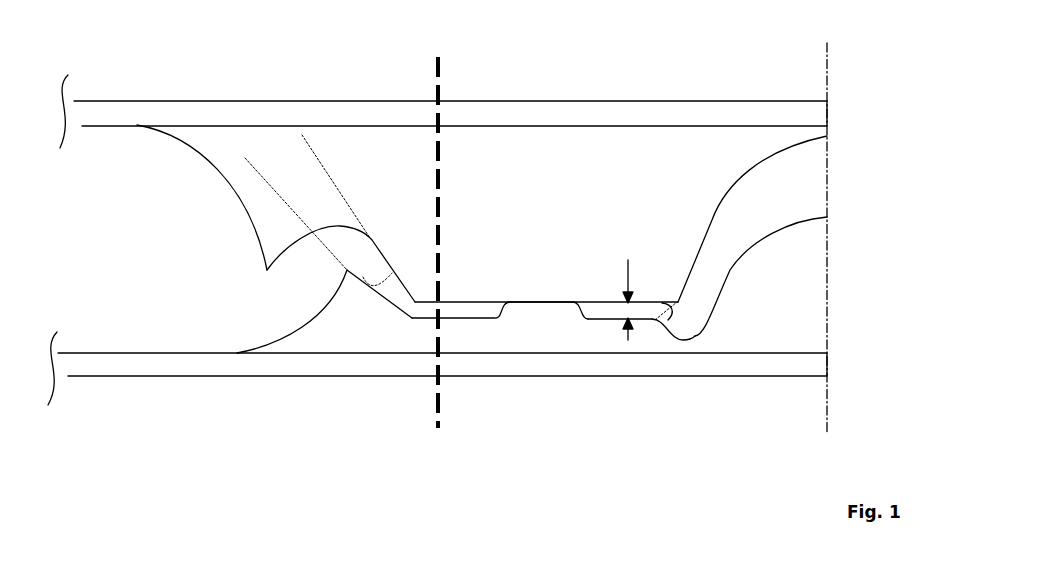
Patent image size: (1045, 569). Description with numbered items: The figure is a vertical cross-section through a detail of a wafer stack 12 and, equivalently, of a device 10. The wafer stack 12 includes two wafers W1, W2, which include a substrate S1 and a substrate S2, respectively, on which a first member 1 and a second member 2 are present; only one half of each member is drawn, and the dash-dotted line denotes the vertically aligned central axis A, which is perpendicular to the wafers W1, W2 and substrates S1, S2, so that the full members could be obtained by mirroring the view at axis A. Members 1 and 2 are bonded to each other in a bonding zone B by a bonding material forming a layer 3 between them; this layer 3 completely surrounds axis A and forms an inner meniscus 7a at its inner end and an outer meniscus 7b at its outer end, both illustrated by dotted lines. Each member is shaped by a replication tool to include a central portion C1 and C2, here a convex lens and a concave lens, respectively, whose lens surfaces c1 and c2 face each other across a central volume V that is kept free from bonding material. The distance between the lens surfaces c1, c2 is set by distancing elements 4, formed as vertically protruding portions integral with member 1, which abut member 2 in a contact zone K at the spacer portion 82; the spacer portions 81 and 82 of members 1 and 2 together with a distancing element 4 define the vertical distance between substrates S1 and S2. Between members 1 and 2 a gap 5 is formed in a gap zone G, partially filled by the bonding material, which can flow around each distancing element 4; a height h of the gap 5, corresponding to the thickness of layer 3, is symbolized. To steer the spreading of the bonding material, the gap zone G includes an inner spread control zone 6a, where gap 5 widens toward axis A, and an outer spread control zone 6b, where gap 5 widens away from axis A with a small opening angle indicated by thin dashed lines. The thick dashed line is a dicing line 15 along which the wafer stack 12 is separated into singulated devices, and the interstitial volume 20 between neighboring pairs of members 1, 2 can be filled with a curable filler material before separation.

The first member 1 is at (783, 329).
The second member 2 is at (330, 156).
The layer 3 is at (602, 308).
The distancing element 4 is at (522, 305).
The gap 5 is at (434, 234).
The inner spread control zone 6a is at (662, 302).
The outer spread control zone 6b is at (387, 290).
The inner meniscus 7a is at (383, 305).
The outer meniscus 7b is at (677, 333).
The device 10 is at (775, 447).
The wafer stack 12 is at (115, 462).
The dicing line 15 is at (438, 70).
The interstitial volume 20 is at (148, 140).
The spacer portion 81 is at (616, 234).
The spacer portion 82 is at (598, 207).
The central axis A is at (828, 80).
The bonding zone B is at (534, 380).
The contact zone K is at (534, 234).
The gap zone G is at (410, 318).
The substrate S1 is at (785, 363).
The substrate S2 is at (728, 113).
The central portion C1 is at (802, 295).
The central portion C2 is at (763, 142).
The lens surface c1 is at (803, 217).
The lens surface c2 is at (838, 92).
The central volume V is at (767, 200).
The wafer W1 is at (106, 300).
The wafer W2 is at (108, 212).
The height of the gap h is at (633, 299).